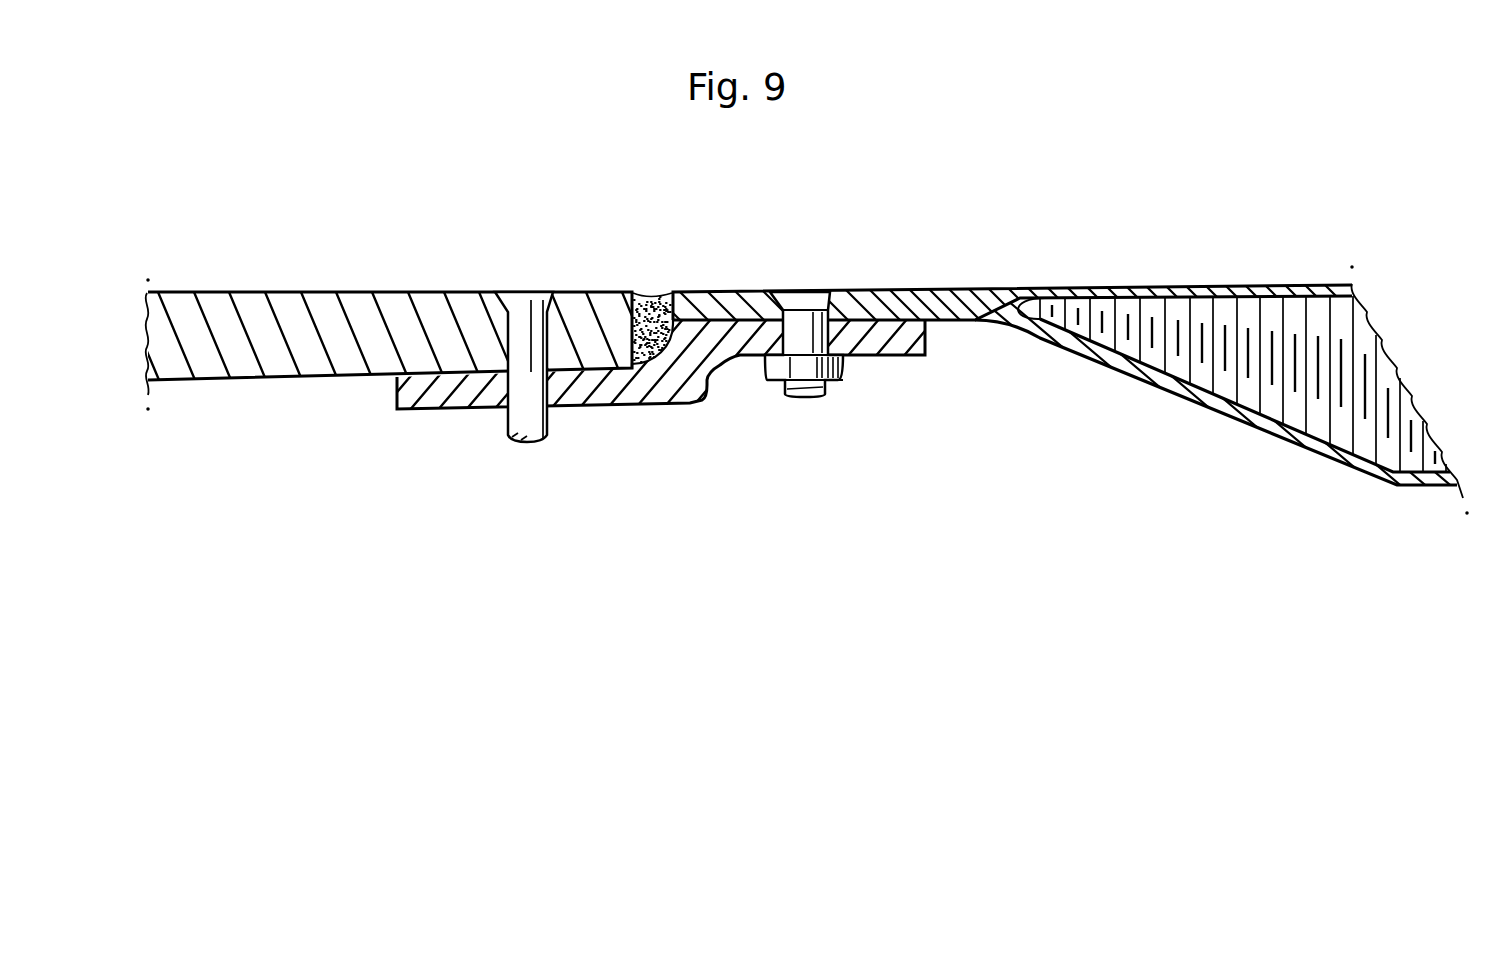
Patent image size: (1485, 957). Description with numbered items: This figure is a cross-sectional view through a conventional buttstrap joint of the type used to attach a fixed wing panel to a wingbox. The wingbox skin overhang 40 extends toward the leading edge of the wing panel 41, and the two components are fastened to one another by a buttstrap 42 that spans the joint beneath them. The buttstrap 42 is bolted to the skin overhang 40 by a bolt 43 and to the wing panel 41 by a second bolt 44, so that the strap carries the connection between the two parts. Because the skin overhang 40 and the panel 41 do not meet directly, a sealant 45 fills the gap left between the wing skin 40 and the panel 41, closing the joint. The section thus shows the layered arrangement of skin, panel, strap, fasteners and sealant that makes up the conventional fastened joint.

The wingbox skin overhang 40 is at (216, 311).
The wing panel 41 is at (734, 309).
The buttstrap 42 is at (667, 406).
The bolt 43 is at (517, 300).
The bolt 44 is at (808, 293).
The sealant 45 is at (650, 295).